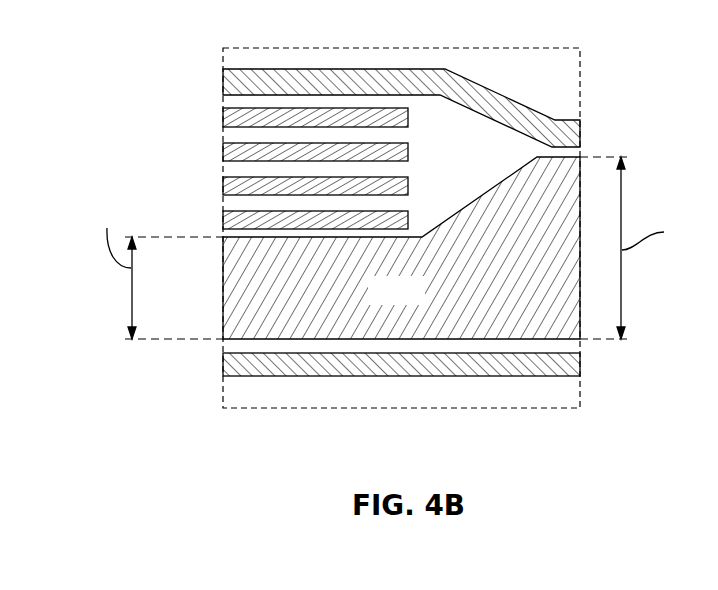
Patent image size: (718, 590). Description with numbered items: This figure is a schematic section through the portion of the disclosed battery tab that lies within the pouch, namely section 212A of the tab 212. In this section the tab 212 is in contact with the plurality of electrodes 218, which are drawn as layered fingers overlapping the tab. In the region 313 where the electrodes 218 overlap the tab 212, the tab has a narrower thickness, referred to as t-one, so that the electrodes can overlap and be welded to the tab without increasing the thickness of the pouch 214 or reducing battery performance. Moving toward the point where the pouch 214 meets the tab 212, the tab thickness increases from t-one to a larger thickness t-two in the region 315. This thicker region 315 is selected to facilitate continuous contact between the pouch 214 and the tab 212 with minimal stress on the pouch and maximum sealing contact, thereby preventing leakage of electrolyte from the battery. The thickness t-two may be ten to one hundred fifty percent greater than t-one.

The tab 212 is at (421, 302).
The section of the tab lying within the pouch 212A is at (223, 103).
The pouch 214 is at (530, 107).
The electrodes 218 is at (408, 186).
The region of electrode overlap 313 is at (245, 288).
The region where the pouch meets the tab 315 is at (563, 297).